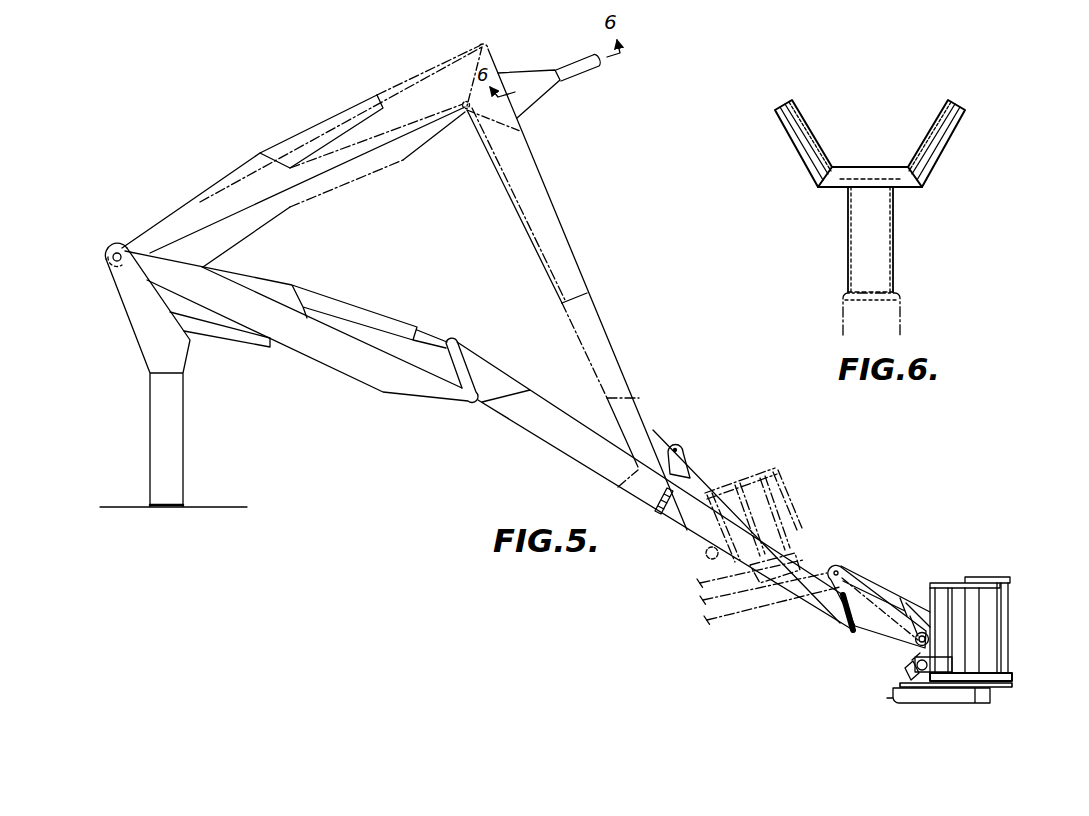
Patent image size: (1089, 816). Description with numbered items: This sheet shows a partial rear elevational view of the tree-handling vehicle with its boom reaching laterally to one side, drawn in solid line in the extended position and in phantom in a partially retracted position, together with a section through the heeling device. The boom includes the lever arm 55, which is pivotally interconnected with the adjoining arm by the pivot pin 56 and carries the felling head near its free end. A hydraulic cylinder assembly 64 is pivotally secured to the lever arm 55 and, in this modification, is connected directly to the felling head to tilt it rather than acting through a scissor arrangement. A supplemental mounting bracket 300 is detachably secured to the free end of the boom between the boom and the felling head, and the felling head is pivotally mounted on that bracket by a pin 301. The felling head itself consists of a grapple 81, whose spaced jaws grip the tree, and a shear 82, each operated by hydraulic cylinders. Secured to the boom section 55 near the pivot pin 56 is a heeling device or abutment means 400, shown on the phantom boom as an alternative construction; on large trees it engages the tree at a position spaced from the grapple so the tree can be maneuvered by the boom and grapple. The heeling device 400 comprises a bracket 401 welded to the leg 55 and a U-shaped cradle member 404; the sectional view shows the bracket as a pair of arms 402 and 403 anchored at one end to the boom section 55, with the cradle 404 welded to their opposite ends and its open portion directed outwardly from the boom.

In FIG. 5, the lever arm 55 is at (550, 203).
In FIG. 6, the lever arm 55 is at (898, 318).
In FIG. 5, the pivot pin 56 is at (463, 113).
In FIG. 5, the hydraulic cylinder assembly 64 is at (880, 589).
In FIG. 5, the grapple 81 is at (990, 619).
In FIG. 5, the shear 82 is at (980, 710).
In FIG. 5, the supplemental mounting bracket 300 is at (690, 478).
In FIG. 5, the pin 301 is at (705, 553).
In FIG. 5, the heeling device 400 is at (533, 108).
In FIG. 6, the heeling device 400 is at (883, 141).
In FIG. 5, the bracket 401 is at (527, 80).
In FIG. 6, the arm 402 is at (848, 229).
In FIG. 6, the arm 403 is at (895, 232).
In FIG. 6, the U-shaped cradle member 404 is at (940, 151).